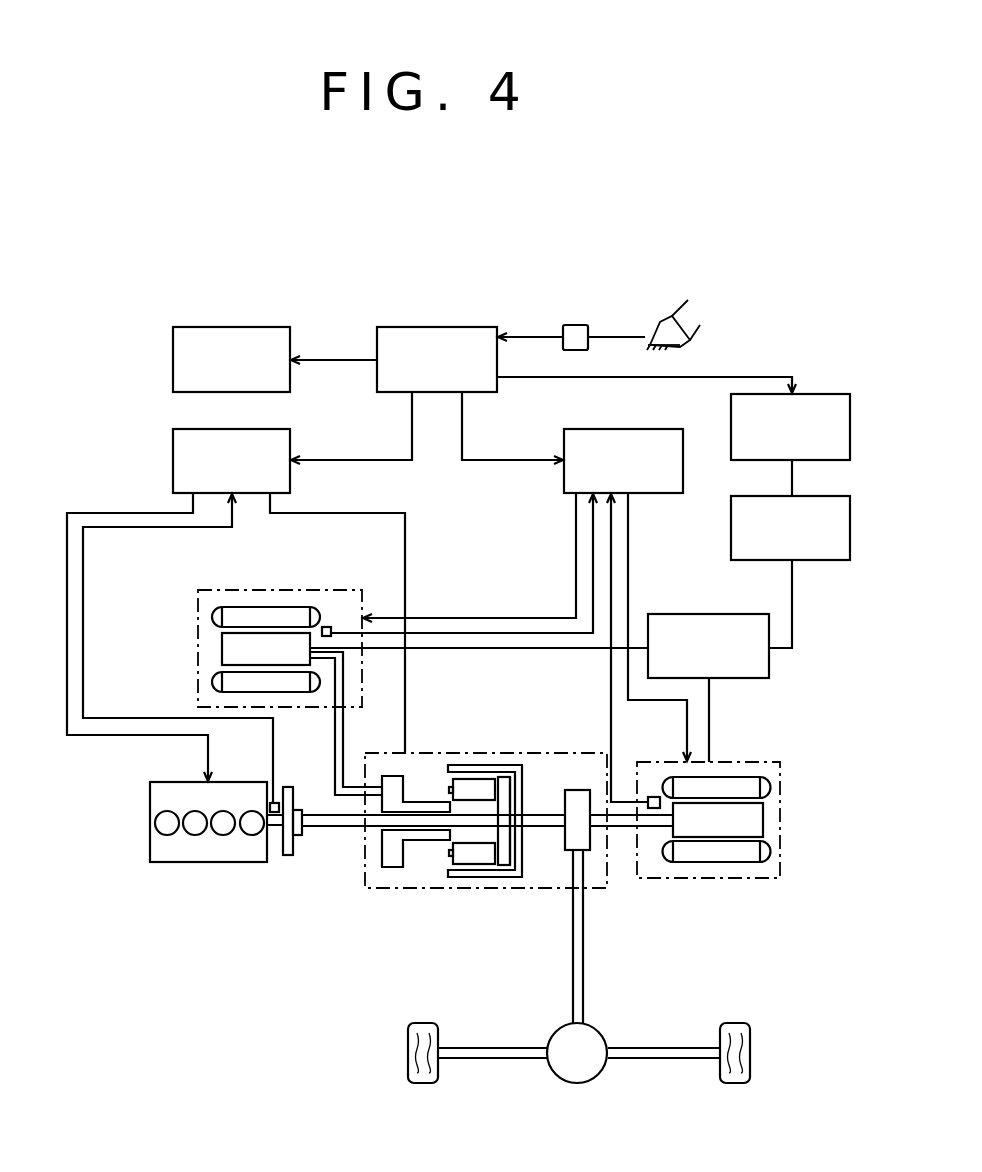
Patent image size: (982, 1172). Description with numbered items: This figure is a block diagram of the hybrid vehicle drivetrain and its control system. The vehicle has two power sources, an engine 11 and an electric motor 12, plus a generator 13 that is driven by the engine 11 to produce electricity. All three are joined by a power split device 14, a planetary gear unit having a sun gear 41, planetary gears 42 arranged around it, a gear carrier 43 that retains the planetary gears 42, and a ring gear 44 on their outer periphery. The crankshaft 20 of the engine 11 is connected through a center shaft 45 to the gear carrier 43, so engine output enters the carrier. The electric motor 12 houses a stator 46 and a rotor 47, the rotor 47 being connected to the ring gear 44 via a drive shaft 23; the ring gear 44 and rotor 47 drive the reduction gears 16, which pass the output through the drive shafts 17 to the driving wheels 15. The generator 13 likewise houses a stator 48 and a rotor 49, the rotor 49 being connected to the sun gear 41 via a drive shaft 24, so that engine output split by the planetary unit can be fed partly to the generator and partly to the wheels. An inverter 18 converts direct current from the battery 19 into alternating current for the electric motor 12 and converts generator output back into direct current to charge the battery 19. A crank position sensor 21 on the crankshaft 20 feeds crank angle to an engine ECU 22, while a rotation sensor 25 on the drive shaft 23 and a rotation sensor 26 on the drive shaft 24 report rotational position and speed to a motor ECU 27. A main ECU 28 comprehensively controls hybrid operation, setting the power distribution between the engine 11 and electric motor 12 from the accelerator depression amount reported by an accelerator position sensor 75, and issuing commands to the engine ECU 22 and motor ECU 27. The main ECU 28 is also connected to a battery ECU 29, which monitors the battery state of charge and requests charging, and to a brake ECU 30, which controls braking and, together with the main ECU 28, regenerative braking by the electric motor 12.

The engine 11 is at (178, 782).
The electric motor 12 is at (732, 789).
The generator 13 is at (255, 641).
The power split device 14 is at (486, 814).
The driving wheels 15 is at (423, 1023).
The reduction gears 16 is at (600, 1031).
The drive shafts 17 is at (494, 1047).
The inverter 18 is at (724, 593).
The battery 19 is at (824, 475).
The crankshaft 20 is at (275, 830).
The crank position sensor 21 is at (270, 803).
The engine ECU 22 is at (258, 407).
The drive shaft 23 is at (620, 828).
The drive shaft 24 is at (350, 643).
The rotation sensor 25 is at (654, 797).
The rotation sensor 26 is at (327, 627).
The motor ECU 27 is at (651, 407).
The main ECU 28 is at (461, 306).
The battery ECU 29 is at (824, 373).
The brake ECU 30 is at (258, 306).
The sun gear 41 is at (495, 832).
The planetary gears 42 is at (455, 788).
The gear carrier 43 is at (512, 855).
The ring gear 44 is at (472, 878).
The center shaft 45 is at (318, 827).
The stator 46 is at (745, 780).
The rotor 47 is at (755, 815).
The stator 48 is at (300, 686).
The rotor 49 is at (228, 650).
The accelerator position sensor 75 is at (584, 305).